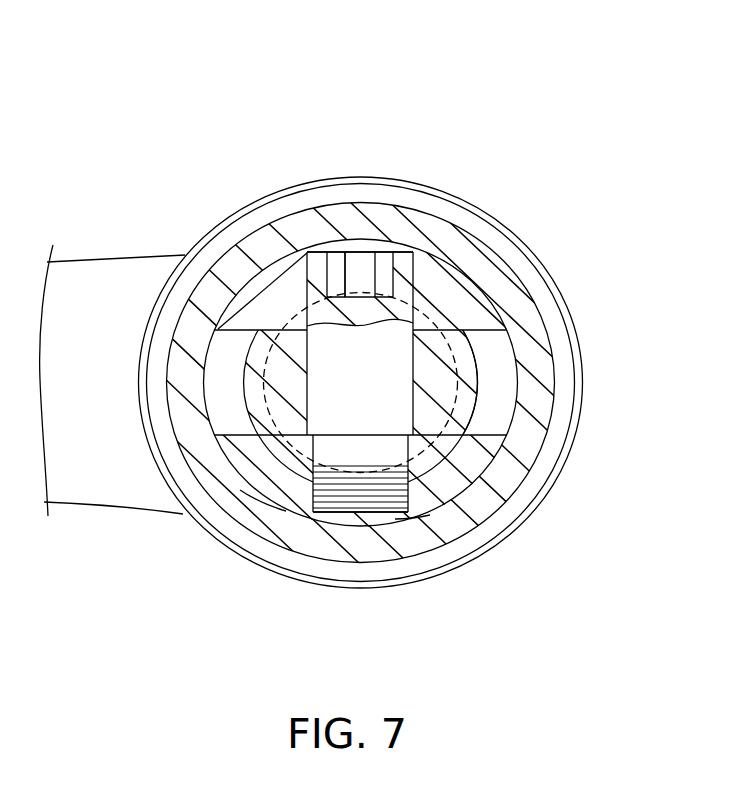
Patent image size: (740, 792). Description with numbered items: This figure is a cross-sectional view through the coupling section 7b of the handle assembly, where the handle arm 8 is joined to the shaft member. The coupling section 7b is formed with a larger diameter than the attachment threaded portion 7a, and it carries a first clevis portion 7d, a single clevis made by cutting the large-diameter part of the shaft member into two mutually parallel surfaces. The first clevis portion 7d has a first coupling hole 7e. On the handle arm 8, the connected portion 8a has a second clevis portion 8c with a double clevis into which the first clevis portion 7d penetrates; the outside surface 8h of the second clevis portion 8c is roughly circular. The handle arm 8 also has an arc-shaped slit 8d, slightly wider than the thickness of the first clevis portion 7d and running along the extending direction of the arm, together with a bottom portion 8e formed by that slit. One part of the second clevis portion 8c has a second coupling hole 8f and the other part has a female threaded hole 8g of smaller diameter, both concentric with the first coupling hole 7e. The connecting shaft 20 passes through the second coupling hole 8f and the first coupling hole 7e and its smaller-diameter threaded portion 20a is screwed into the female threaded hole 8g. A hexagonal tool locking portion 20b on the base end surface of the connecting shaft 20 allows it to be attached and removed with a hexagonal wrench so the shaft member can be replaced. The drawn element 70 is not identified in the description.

The attachment threaded portion 7a is at (480, 373).
The coupling section 7b is at (454, 312).
The first clevis portion 7d is at (480, 361).
The first coupling hole 7e is at (250, 510).
The handle arm 8 is at (117, 242).
The connected portion 8a is at (423, 248).
The second clevis portion 8c is at (412, 527).
The arc-shaped slit 8d is at (477, 438).
The bottom portion 8e is at (229, 402).
The second coupling hole 8f is at (338, 292).
The female threaded hole 8g is at (332, 514).
The outside surface 8h is at (458, 498).
The connecting shaft 20 is at (300, 284).
The threaded portion 20a is at (426, 527).
The tool locking portion 20b is at (389, 247).
The outer sleeve 70 is at (546, 290).